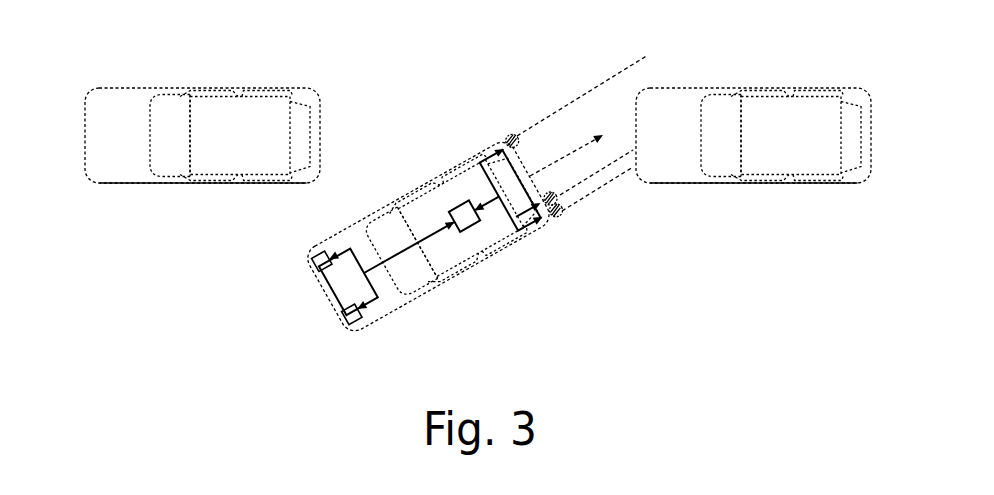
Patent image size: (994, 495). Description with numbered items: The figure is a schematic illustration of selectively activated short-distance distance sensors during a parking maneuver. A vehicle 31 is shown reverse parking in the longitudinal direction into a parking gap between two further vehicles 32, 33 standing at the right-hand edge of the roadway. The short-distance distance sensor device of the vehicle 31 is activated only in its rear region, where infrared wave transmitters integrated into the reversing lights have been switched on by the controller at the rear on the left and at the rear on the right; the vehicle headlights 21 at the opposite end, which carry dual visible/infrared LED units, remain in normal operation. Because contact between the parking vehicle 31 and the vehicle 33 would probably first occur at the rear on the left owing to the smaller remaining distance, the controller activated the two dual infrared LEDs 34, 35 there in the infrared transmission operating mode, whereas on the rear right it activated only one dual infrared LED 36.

The vehicle headlights 21 is at (319, 252).
The vehicle 31 is at (317, 274).
The further vehicle 32 is at (134, 91).
The further vehicle 33 is at (717, 90).
The dual infrared LED 34 is at (563, 217).
The dual infrared LED 35 is at (568, 198).
The dual infrared LED 36 is at (520, 137).